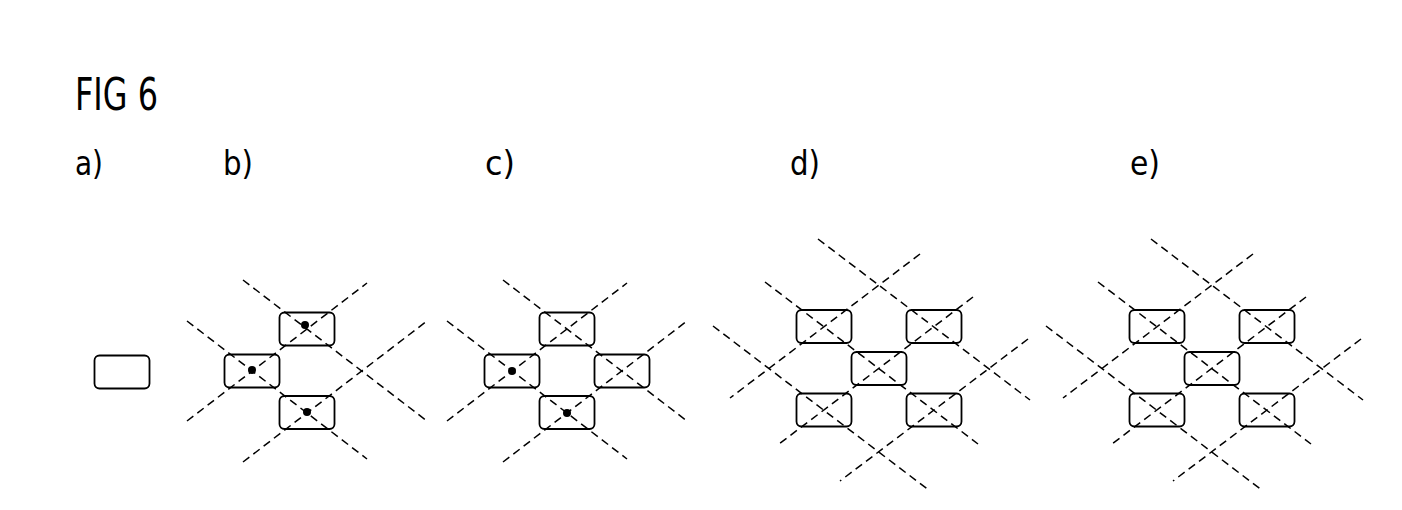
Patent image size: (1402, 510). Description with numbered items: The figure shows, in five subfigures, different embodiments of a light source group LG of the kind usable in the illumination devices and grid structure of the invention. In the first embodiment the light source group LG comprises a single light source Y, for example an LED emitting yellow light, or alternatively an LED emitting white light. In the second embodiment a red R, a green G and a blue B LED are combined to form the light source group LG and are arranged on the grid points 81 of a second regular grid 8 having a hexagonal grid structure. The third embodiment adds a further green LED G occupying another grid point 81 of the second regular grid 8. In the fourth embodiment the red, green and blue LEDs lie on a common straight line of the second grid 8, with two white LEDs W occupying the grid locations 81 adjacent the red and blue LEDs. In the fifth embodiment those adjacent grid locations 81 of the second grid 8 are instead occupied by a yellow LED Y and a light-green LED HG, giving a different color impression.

The second regular grid 8 is at (262, 453).
The grid points 81 is at (301, 318).
The light source group LG is at (116, 331).